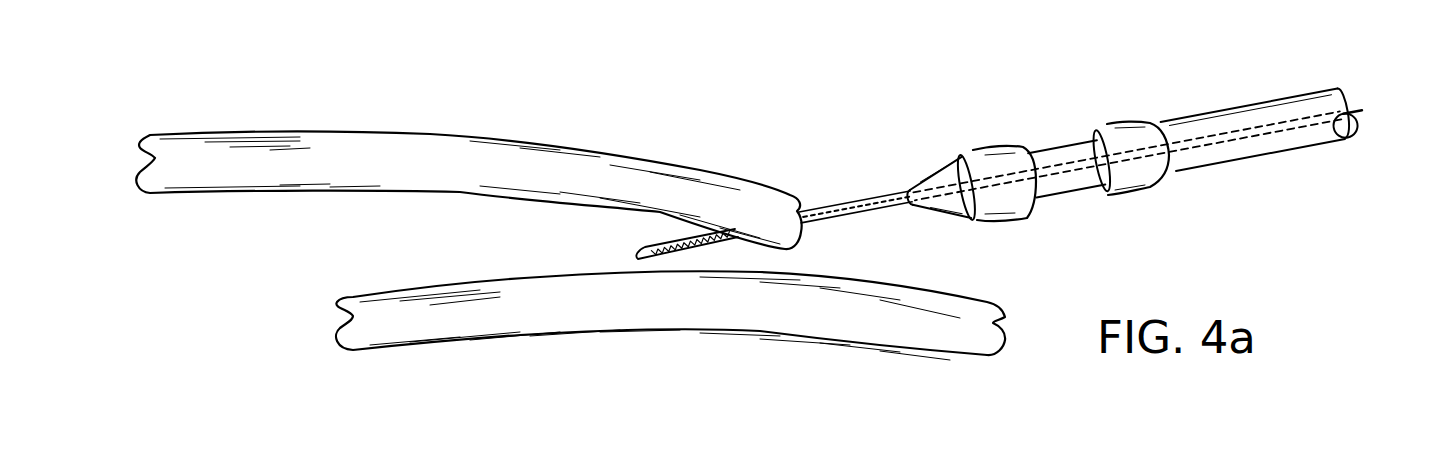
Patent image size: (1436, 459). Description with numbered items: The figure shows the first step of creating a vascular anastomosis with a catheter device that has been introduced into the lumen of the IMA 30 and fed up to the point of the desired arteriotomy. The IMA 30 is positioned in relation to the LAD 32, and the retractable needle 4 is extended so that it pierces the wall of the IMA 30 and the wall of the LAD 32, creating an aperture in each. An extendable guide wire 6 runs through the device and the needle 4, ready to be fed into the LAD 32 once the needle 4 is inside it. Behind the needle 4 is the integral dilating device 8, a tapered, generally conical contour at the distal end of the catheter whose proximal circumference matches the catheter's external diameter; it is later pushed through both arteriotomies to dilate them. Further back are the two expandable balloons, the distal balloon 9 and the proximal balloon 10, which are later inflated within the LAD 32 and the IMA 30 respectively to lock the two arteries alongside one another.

The retractable needle 4 is at (843, 208).
The extendable guide wire 6 is at (842, 216).
The integral dilating device 8 is at (923, 180).
The distal balloon 9 is at (1000, 221).
The proximal balloon 10 is at (1127, 193).
The IMA 30 is at (402, 133).
The LAD 32 is at (460, 346).